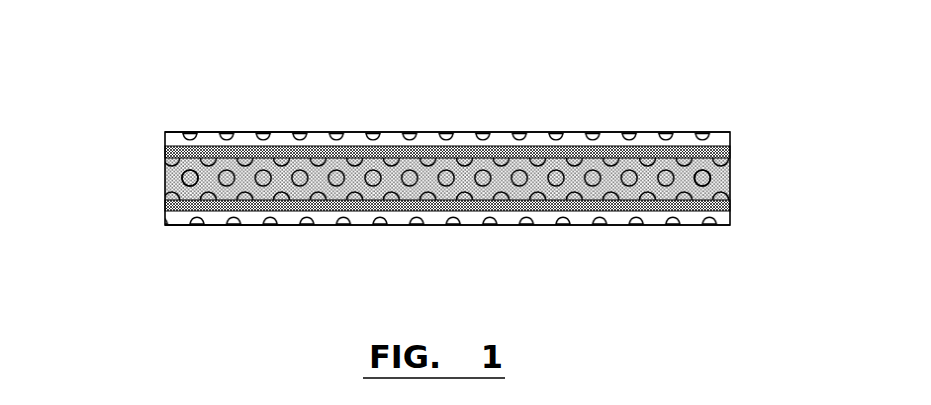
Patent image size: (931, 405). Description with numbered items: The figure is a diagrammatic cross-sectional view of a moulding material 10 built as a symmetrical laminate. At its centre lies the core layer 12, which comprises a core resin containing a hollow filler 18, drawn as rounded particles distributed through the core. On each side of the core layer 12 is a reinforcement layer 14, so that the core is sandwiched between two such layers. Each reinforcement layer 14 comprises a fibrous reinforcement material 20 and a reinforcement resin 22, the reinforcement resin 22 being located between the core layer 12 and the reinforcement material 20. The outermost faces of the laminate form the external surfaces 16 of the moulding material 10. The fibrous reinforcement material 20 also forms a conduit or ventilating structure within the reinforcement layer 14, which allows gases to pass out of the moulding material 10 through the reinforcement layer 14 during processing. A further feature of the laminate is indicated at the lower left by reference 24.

The moulding material 10 is at (538, 120).
The core layer 12 is at (735, 172).
The reinforcement layer 14 is at (735, 139).
The external surface 16 is at (316, 132).
The hollow filler 18 is at (733, 183).
The fibrous reinforcement material 20 is at (165, 133).
The reinforcement resin 22 is at (165, 153).
The edge 24 is at (213, 230).